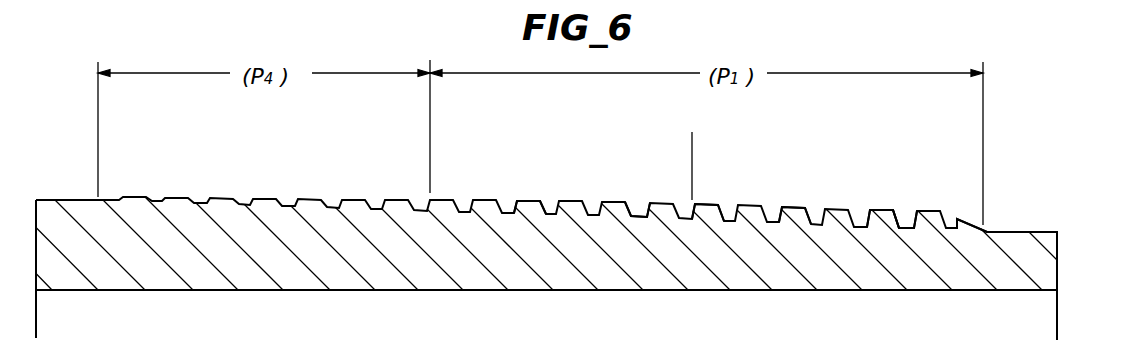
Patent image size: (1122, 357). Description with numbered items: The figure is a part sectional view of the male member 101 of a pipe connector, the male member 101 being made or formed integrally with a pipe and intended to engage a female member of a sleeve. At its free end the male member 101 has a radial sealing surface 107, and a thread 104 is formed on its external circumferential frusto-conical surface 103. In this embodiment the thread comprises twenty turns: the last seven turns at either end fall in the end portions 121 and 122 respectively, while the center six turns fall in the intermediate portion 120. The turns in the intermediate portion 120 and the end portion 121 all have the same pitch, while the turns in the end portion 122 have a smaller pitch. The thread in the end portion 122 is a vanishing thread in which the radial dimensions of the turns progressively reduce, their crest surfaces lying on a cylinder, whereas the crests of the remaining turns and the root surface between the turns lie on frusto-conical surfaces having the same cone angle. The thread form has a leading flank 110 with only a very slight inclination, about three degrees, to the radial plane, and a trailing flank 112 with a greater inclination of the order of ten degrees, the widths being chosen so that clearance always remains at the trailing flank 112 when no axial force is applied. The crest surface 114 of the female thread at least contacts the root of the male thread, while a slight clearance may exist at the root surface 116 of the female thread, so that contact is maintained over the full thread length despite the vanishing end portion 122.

The male member 101 is at (753, 281).
The external circumferential frusto-conical surface 103 is at (510, 198).
The thread 104 is at (706, 203).
The radial sealing surface 107 is at (1057, 268).
The leading flank 110 is at (643, 200).
The trailing flank 112 is at (806, 207).
The crest surface 114 is at (906, 226).
The root surface 116 is at (875, 209).
The intermediate portion 120 is at (692, 143).
The end portion 121 is at (983, 143).
The end portion 122 is at (430, 143).